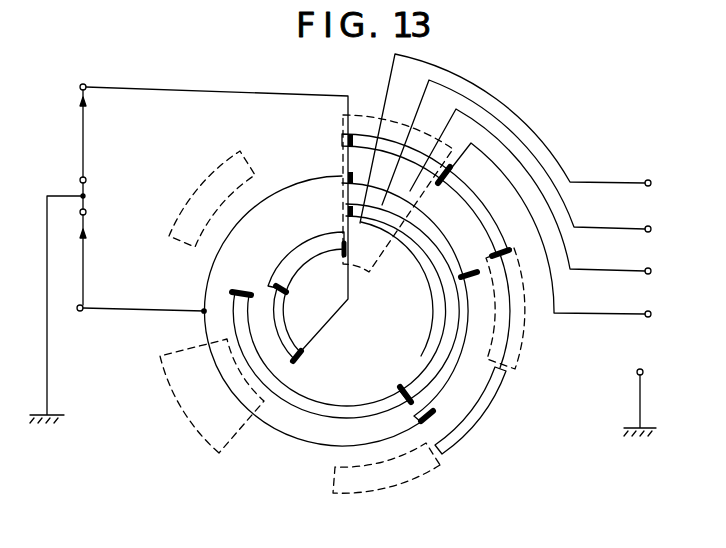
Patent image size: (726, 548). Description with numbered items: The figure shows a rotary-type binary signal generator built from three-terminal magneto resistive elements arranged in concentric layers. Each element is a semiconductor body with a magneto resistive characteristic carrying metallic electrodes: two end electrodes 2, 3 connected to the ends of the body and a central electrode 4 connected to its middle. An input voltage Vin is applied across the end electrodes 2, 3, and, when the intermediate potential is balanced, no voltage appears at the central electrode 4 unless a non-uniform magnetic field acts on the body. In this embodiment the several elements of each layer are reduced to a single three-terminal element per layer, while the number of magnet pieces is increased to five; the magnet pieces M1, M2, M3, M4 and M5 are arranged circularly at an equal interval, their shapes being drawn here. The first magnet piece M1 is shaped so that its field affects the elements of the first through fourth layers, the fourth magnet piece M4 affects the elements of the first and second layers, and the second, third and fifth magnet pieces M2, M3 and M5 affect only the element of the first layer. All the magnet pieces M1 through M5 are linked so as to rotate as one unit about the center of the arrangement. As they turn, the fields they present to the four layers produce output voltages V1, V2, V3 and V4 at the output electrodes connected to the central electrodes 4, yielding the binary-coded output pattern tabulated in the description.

The end electrode 2 is at (348, 141).
The end electrode 3 is at (243, 289).
The central electrode 4 is at (284, 291).
The first magnet piece M1 is at (368, 114).
The second magnet piece M2 is at (514, 366).
The third magnet piece M3 is at (432, 462).
The fourth magnet piece M4 is at (246, 426).
The fifth magnet piece M5 is at (206, 200).
The output voltage V1 is at (560, 235).
The output voltage V2 is at (545, 196).
The output voltage V3 is at (531, 161).
The output voltage V4 is at (520, 138).
The input voltage Vin is at (107, 208).